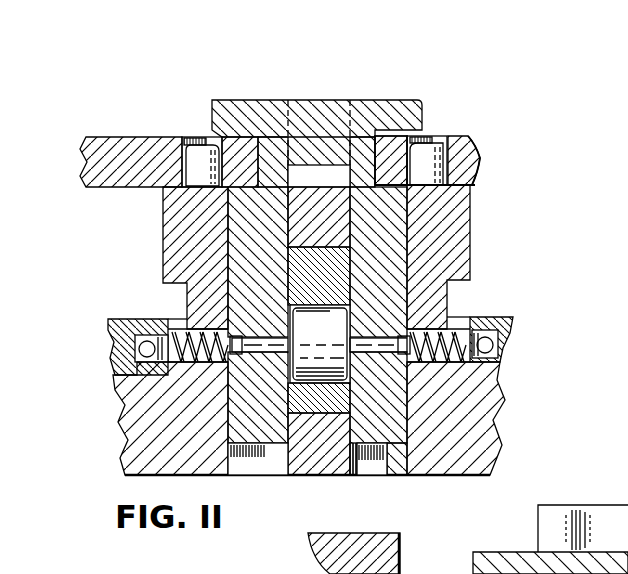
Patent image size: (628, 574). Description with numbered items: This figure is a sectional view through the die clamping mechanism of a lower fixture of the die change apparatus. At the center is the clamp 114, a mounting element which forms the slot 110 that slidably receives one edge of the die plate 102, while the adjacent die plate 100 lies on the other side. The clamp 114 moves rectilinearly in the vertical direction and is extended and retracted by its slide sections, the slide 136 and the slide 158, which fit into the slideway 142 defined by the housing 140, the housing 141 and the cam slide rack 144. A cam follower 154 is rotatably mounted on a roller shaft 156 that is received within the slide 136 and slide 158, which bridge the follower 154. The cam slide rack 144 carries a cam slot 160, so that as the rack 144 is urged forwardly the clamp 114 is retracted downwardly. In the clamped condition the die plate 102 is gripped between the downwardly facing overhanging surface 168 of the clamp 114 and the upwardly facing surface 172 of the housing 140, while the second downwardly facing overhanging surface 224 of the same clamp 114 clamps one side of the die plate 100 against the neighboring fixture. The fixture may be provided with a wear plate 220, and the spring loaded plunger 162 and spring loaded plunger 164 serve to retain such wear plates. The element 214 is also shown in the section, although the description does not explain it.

The die plate 100 is at (116, 152).
The second downwardly facing overhanging surface 224 is at (207, 141).
The clamp 114 is at (322, 100).
The slot 110 is at (393, 143).
The downwardly facing overhanging surface 168 is at (433, 143).
The right clamp block 214 is at (480, 158).
The die plate 102 is at (473, 185).
The upwardly facing surface 172 is at (468, 193).
The slideway 142 is at (415, 207).
The housing 141 is at (175, 242).
The cam slide rack 144 is at (288, 268).
The wear plate 220 is at (110, 325).
The spring loaded plunger 162 is at (135, 362).
The cam slot 160 is at (325, 310).
The spring loaded plunger 164 is at (510, 358).
The roller shaft 156 is at (382, 355).
The housing 140 is at (488, 458).
The slide 158 is at (270, 447).
The cam follower 154 is at (330, 373).
The slide 136 is at (385, 453).